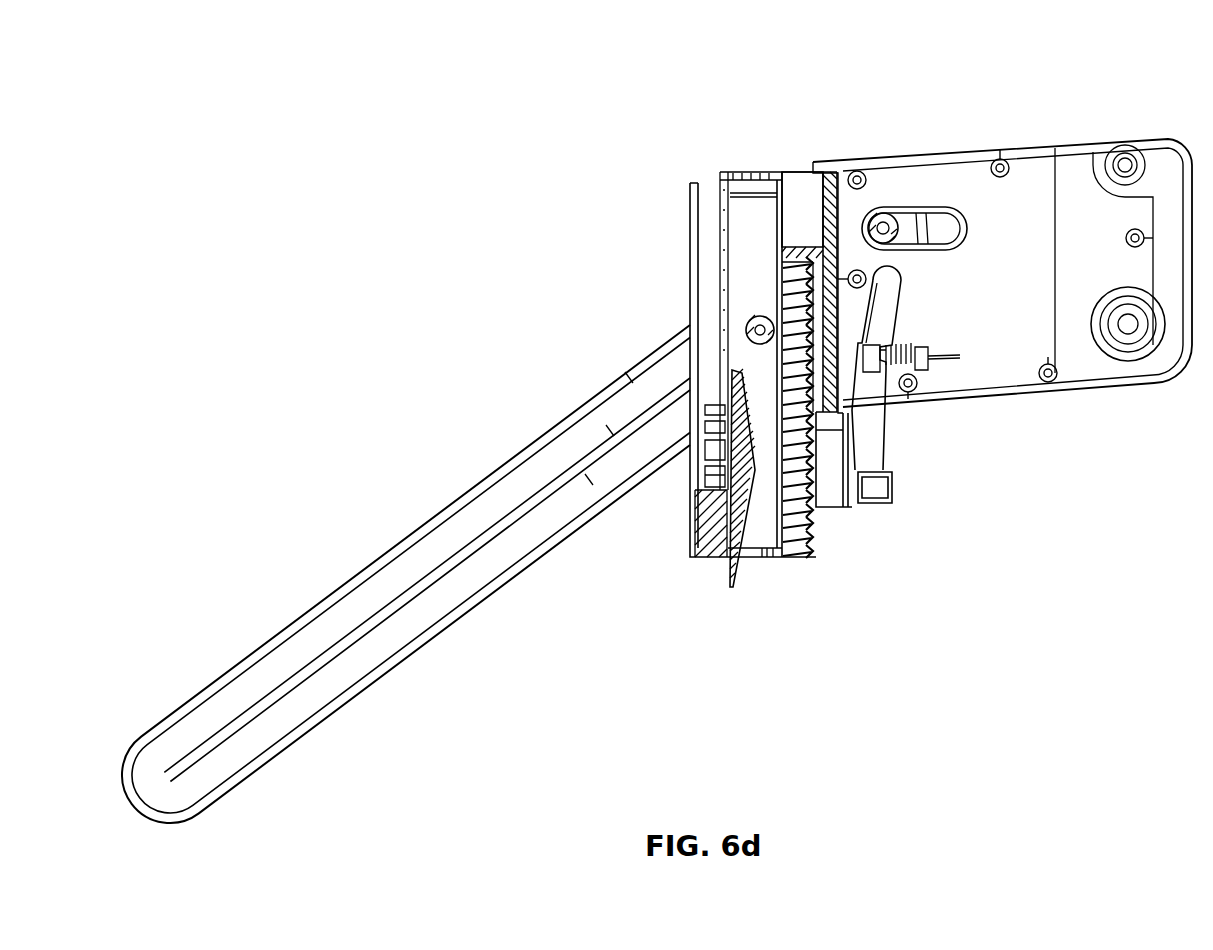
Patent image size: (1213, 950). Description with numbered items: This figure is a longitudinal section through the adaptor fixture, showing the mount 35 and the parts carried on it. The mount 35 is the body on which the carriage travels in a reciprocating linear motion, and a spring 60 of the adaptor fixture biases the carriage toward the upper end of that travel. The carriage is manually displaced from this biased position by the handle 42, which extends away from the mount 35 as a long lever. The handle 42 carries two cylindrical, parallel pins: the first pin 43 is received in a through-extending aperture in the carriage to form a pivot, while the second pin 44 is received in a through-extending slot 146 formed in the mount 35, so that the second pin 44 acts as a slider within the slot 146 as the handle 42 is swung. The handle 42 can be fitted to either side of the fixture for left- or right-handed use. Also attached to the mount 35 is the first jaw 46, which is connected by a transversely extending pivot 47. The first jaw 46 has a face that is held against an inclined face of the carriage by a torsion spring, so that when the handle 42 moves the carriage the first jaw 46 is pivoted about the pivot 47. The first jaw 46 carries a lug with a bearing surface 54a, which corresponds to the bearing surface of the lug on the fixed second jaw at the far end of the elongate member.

The handle 42 is at (413, 510).
The first pin 43 is at (748, 323).
The spring 60 is at (798, 260).
The second pin 44 is at (886, 218).
The slot 146 is at (940, 222).
The pivot 47 is at (920, 284).
The bearing surface 54a is at (892, 464).
The mount 35 is at (1017, 373).
The first jaw 46 is at (838, 493).